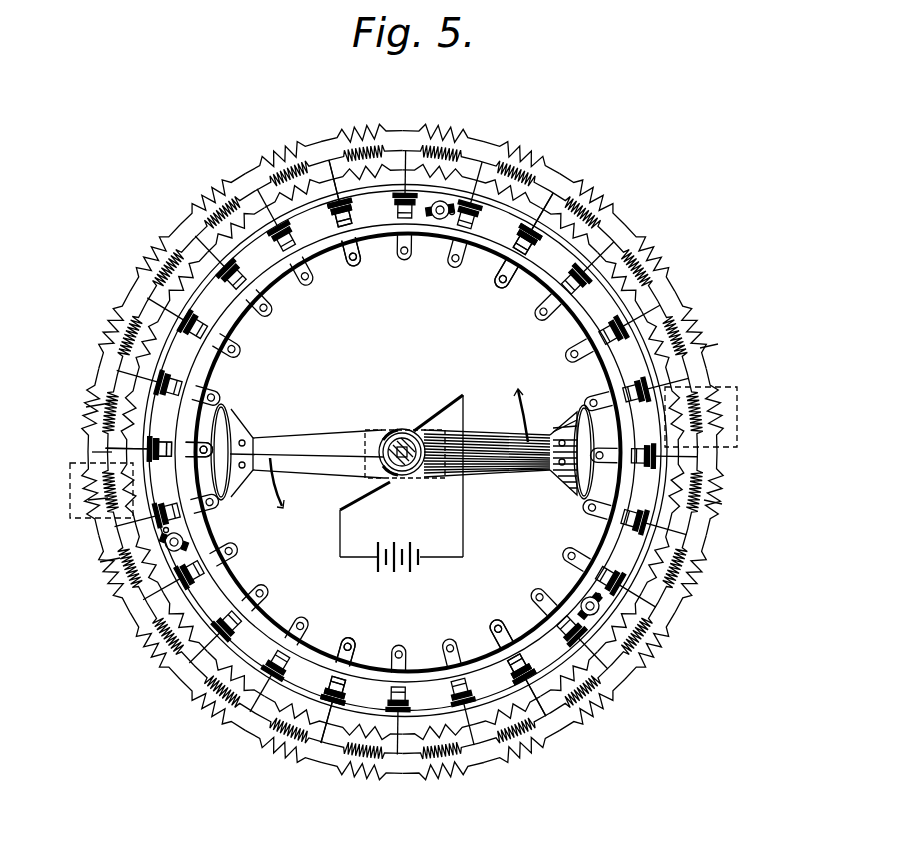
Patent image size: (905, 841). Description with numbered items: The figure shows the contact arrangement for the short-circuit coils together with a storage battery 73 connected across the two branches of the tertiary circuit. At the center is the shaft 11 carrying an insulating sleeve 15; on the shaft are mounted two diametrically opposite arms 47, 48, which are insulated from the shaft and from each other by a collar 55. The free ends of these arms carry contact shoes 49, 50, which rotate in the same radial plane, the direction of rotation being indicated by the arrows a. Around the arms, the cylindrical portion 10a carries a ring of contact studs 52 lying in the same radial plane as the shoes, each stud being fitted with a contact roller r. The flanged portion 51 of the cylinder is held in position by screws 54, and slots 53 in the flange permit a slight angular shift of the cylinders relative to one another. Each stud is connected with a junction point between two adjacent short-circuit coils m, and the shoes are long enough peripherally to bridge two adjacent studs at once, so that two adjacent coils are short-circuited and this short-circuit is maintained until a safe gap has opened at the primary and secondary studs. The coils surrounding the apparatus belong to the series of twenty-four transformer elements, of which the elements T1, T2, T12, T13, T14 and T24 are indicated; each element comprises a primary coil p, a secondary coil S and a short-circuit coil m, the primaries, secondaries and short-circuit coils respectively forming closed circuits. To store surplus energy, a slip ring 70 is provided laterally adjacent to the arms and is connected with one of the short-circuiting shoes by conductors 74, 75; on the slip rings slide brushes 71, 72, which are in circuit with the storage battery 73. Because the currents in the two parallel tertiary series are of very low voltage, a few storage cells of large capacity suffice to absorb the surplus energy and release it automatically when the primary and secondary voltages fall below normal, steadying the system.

The cylindrical portion 10a is at (448, 236).
The shaft 11 is at (406, 475).
The insulating sleeve 15 is at (409, 430).
The arm 47 is at (486, 442).
The arm 48 is at (303, 440).
The contact shoe 49 is at (580, 408).
The contact shoe 50 is at (230, 413).
The flanged portion 51 is at (510, 270).
The contact stud 52 is at (236, 328).
The slot 53 is at (454, 210).
The screw 54 is at (438, 200).
The collar 55 is at (398, 430).
The slip ring 70 is at (388, 432).
The brush 71 is at (446, 408).
The brush 72 is at (360, 500).
The storage battery 73 is at (398, 572).
The conductor 74 is at (500, 458).
The conductor 75 is at (330, 465).
The contact roller r is at (350, 268).
The short-circuit coil m is at (120, 474).
The primary coil p is at (100, 498).
The secondary coil S is at (108, 460).
The transformer element T1 is at (70, 486).
The transformer element T2 is at (100, 395).
The transformer element T12 is at (700, 348).
The transformer element T13 is at (737, 418).
The transformer element T14 is at (712, 502).
The transformer element T24 is at (112, 568).
The direction arrow a is at (400, 448).